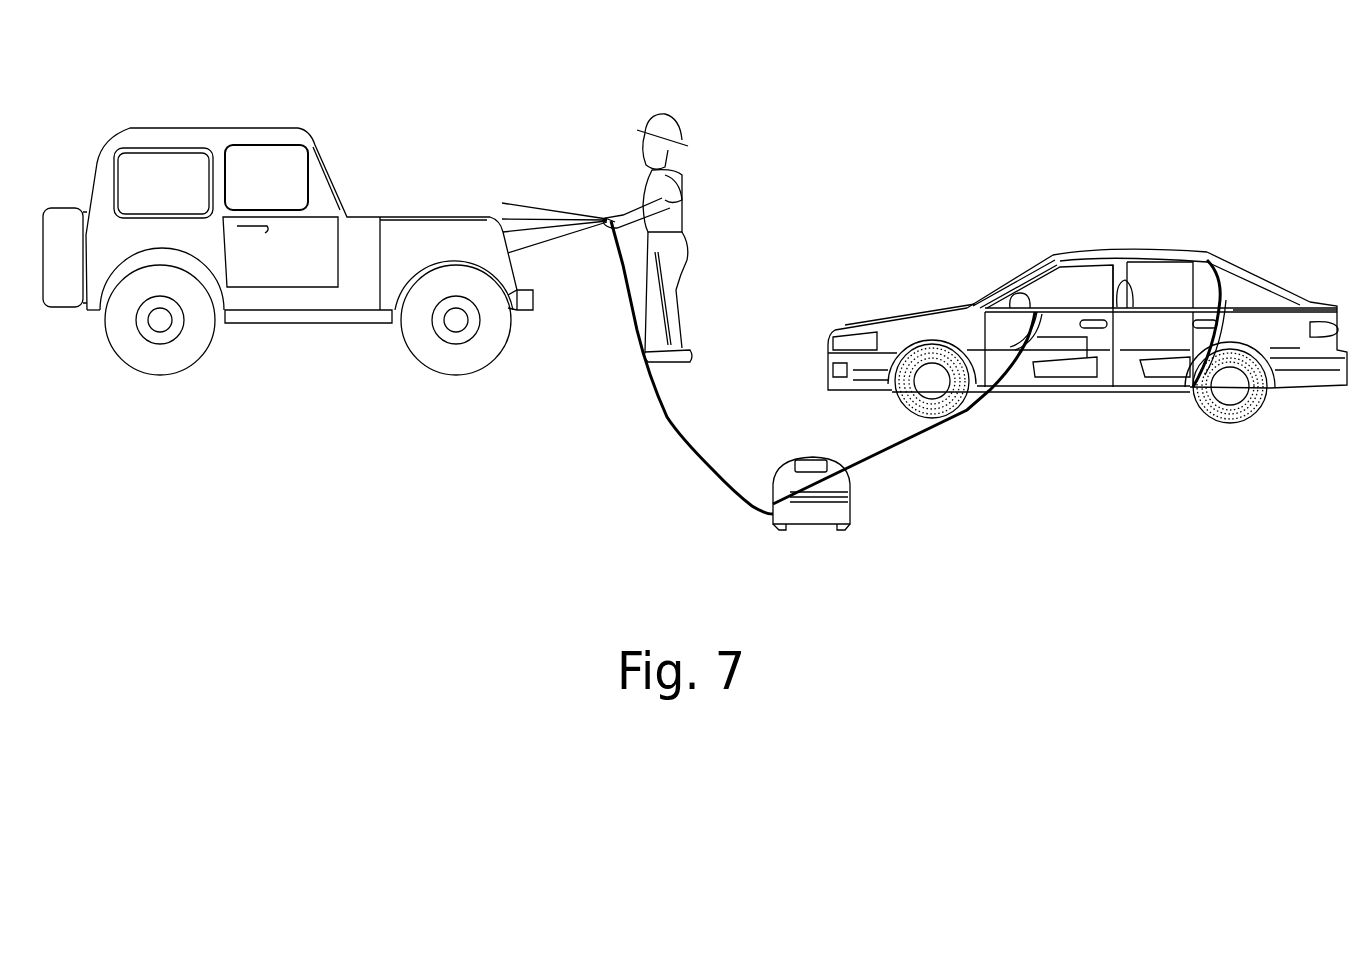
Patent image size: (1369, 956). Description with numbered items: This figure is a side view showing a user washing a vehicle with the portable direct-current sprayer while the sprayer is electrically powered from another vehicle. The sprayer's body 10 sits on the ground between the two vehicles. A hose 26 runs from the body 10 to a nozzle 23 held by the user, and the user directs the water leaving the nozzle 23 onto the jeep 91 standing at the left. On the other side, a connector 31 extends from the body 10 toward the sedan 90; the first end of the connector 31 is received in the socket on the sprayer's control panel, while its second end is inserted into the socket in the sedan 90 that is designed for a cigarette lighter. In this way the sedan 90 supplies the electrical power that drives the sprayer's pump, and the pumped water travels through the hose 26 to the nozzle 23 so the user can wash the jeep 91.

The jeep 91 is at (425, 138).
The nozzle 23 is at (611, 218).
The hose 26 is at (667, 417).
The body 10 is at (850, 514).
The connector 31 is at (860, 465).
The sedan 90 is at (1105, 230).